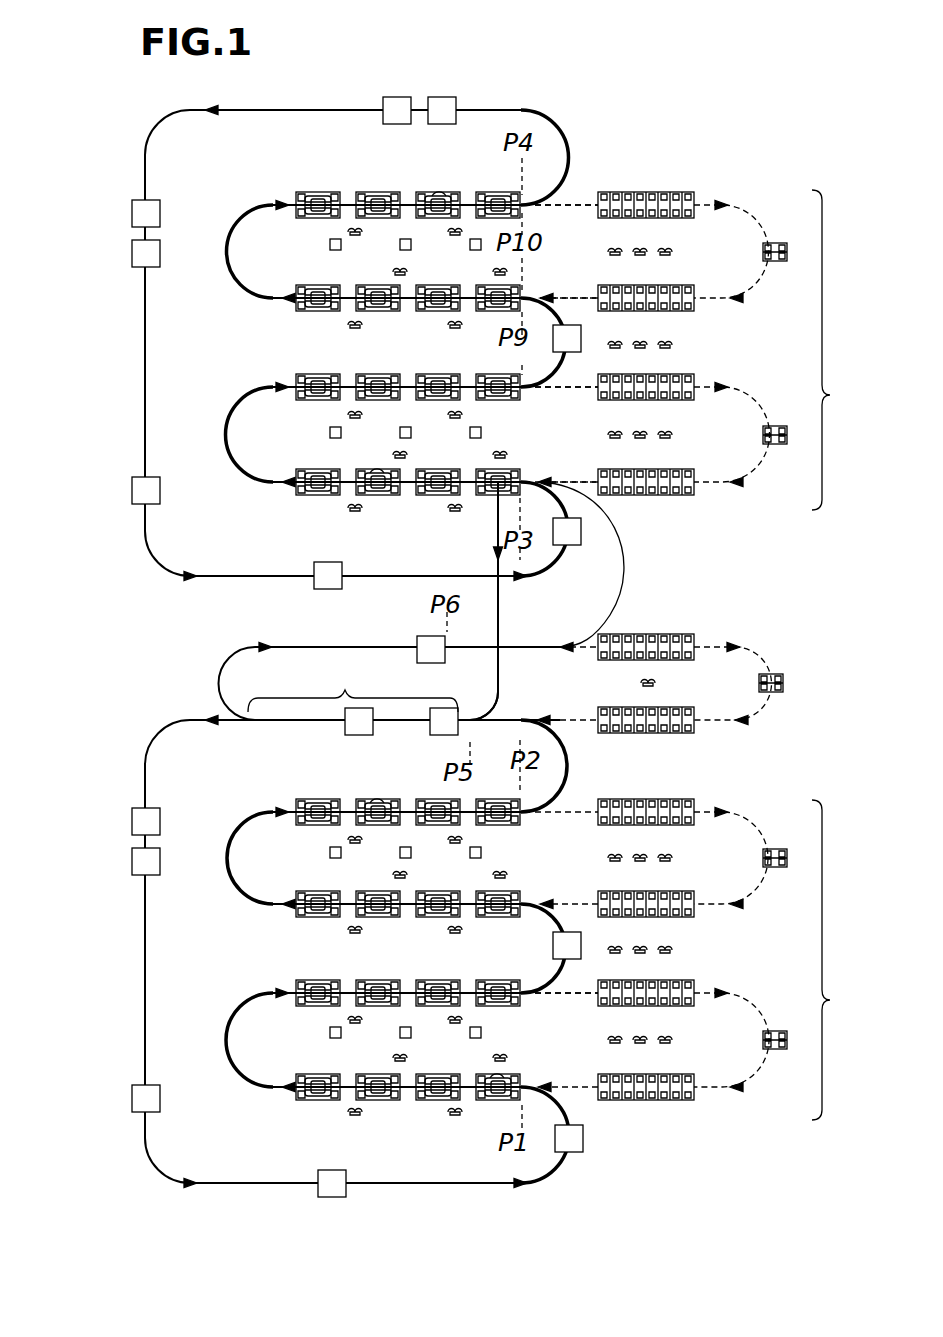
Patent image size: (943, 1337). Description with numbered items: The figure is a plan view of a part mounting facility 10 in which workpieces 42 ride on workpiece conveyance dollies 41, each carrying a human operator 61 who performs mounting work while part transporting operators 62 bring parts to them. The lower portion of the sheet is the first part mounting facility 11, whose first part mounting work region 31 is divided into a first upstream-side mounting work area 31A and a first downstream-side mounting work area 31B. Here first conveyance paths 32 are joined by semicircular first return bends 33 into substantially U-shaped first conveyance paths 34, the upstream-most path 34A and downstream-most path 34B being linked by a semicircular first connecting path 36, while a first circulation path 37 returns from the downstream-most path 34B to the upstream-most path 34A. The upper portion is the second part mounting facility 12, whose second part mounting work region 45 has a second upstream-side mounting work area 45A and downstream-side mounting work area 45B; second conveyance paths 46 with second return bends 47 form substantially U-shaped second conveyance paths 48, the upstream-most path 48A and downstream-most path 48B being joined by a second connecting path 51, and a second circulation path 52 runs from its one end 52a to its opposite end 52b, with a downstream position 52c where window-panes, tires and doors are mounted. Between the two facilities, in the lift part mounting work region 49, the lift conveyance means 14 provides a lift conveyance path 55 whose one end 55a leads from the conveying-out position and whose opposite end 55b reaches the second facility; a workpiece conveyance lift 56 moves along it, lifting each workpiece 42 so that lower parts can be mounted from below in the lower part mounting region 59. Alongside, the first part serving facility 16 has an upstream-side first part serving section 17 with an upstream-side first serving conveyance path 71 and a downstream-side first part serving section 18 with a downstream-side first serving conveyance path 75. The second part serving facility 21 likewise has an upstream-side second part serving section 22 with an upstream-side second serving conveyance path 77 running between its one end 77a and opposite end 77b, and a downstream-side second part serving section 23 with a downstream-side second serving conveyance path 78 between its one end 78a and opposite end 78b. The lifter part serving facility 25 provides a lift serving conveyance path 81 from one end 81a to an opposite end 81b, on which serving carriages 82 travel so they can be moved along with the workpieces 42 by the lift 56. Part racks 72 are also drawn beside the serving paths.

The part mounting facility 10 is at (616, 165).
The first part mounting facility 11 is at (142, 1002).
The second part mounting facility 12 is at (142, 332).
The lift conveyance means 14 is at (216, 683).
The first part serving facility 16 is at (836, 960).
The upstream-side first part serving section 17 is at (748, 1087).
The downstream-side first part serving section 18 is at (756, 889).
The second part serving facility 21 is at (837, 350).
The upstream-side second part serving section 22 is at (746, 476).
The downstream-side second part serving section 23 is at (760, 270).
The lifter part serving facility 25 is at (758, 646).
The first part mounting work region 31 is at (140, 934).
The first upstream-side mounting work area 31A is at (258, 1089).
The first downstream-side mounting work area 31B is at (252, 905).
The first conveyance path 32 is at (414, 1092).
The first return bend 33 is at (233, 866).
The substantially U-shaped first conveyance path 34 is at (268, 814).
The upstream-most substantially U-shaped first conveyance path 34A is at (215, 1035).
The downstream-most substantially U-shaped first conveyance path 34B is at (216, 844).
The first connecting path 36 is at (545, 992).
The first circulation path 37 is at (146, 1058).
The workpiece conveyance dolly 41 is at (396, 97).
The workpiece 42 is at (320, 300).
The second part mounting work region 45 is at (143, 393).
The second upstream-side mounting work area 45A is at (240, 486).
The downstream-side mounting work area 45B is at (238, 292).
The second conveyance path 46 is at (410, 487).
The second return bend 47 is at (233, 265).
The substantially U-shaped second conveyance path 48 is at (268, 206).
The upstream-most substantially U-shaped second conveyance path 48A is at (215, 423).
The downstream-most substantially U-shaped second conveyance path 48B is at (216, 233).
The lift part mounting work region 49 is at (245, 650).
The second connecting path 51 is at (580, 348).
The second circulation path 52 is at (143, 452).
The one end of second circulation path 52a is at (532, 484).
The opposite end of second circulation path 52b is at (534, 300).
The downstream position 52c is at (441, 97).
The lift conveyance path 55 is at (368, 647).
The one end of lift conveyance path 55a is at (470, 715).
The opposite end of lift conveyance path 55b is at (526, 478).
The workpiece conveyance lift 56 is at (422, 638).
The lower part mounting region 59 is at (353, 697).
The human operator 61 is at (440, 214).
The part transporting operator 62 is at (398, 272).
The upstream-side first serving conveyance path 71 is at (706, 1089).
The storage rack 72 is at (686, 193).
The downstream-side first serving conveyance path 75 is at (762, 822).
The upstream-side second serving conveyance path 77 is at (708, 486).
The one end of upstream-side second serving conveyance path 77a is at (580, 492).
The opposite end of upstream-side second serving conveyance path 77b is at (538, 389).
The downstream-side second serving conveyance path 78 is at (700, 300).
The one end of downstream-side second serving conveyance path 78a is at (566, 298).
The opposite end of downstream-side second serving conveyance path 78b is at (540, 210).
The lift serving conveyance path 81 is at (669, 703).
The one end of lift serving conveyance path 81a is at (460, 724).
The opposite end of lift serving conveyance path 81b is at (497, 647).
The serving carriage 82 is at (688, 636).